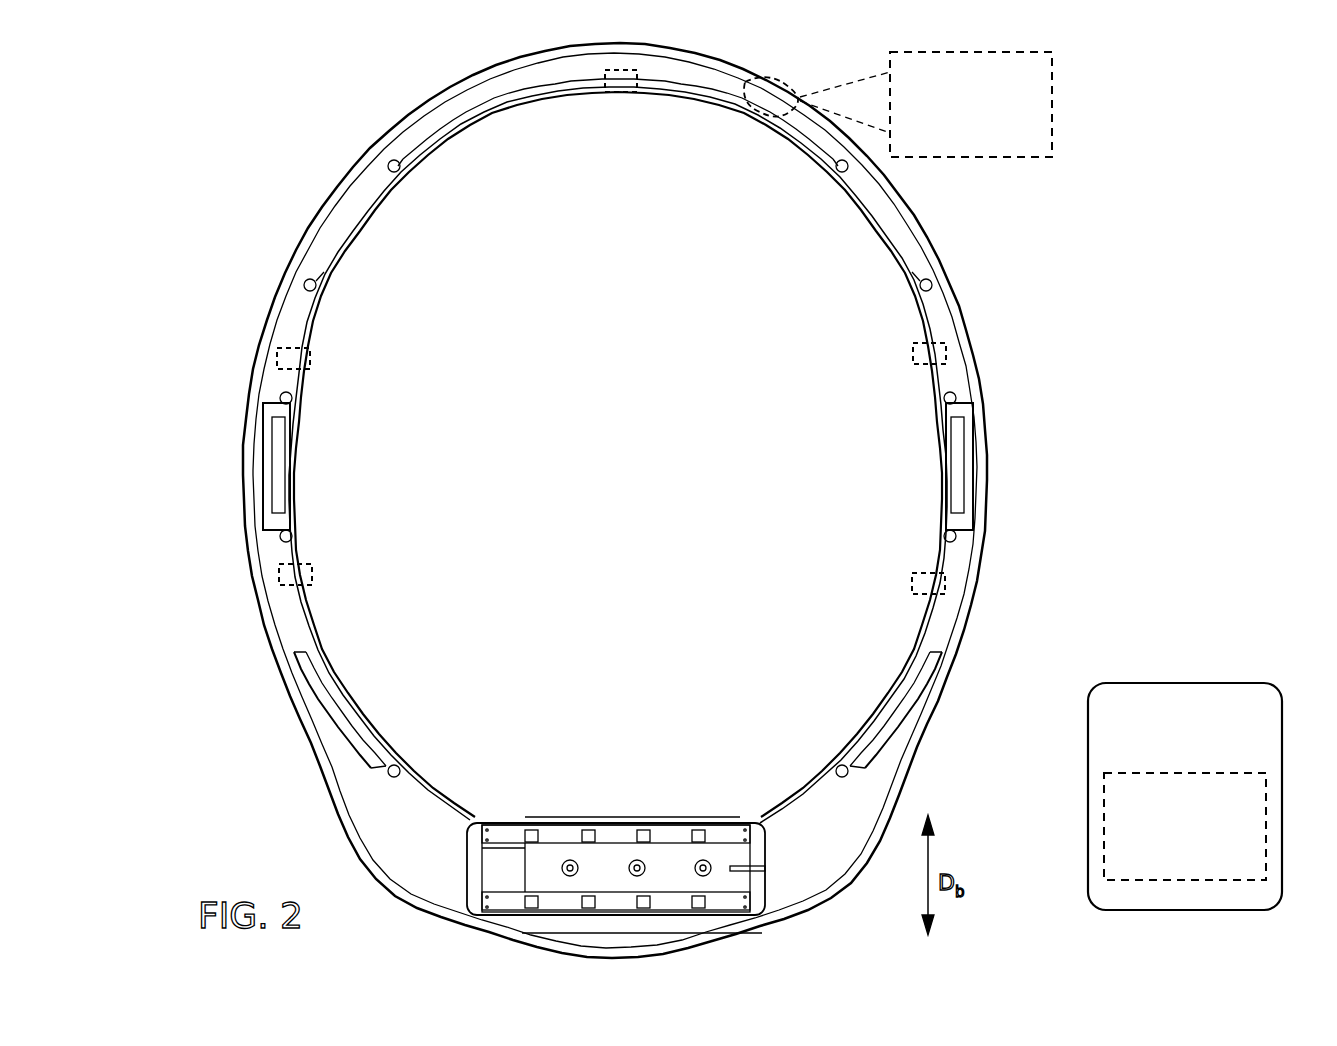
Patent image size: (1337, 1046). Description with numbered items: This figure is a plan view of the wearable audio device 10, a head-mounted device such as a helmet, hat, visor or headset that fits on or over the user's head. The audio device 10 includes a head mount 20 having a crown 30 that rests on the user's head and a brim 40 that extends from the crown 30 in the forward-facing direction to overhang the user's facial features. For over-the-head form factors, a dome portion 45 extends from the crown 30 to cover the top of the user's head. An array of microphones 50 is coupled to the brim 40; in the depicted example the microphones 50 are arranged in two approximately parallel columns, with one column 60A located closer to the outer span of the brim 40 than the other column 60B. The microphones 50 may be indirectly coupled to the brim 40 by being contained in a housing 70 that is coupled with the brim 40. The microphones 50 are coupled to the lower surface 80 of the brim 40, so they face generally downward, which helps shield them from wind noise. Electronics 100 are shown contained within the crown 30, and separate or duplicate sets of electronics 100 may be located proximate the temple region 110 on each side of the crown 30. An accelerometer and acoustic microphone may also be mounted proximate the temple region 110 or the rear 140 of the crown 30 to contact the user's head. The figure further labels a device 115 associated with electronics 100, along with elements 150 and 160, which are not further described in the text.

The wearable audio device 10 is at (288, 99).
The head mount 20 is at (306, 187).
The crown portion 30 is at (230, 388).
The brim 40 is at (330, 748).
The dome portion 45 is at (618, 458).
The microphones 50 is at (584, 826).
The column of microphones 60A is at (514, 908).
The column of microphones 60B is at (555, 864).
The housing 70 is at (466, 906).
The lower surface 80 is at (610, 822).
The electronics 100 is at (1005, 466).
The temple region 110 is at (230, 560).
The device 115 is at (1185, 796).
The rear of the crown 140 is at (657, 102).
The sensor 150 is at (290, 340).
The sensor module 160 is at (549, 95).